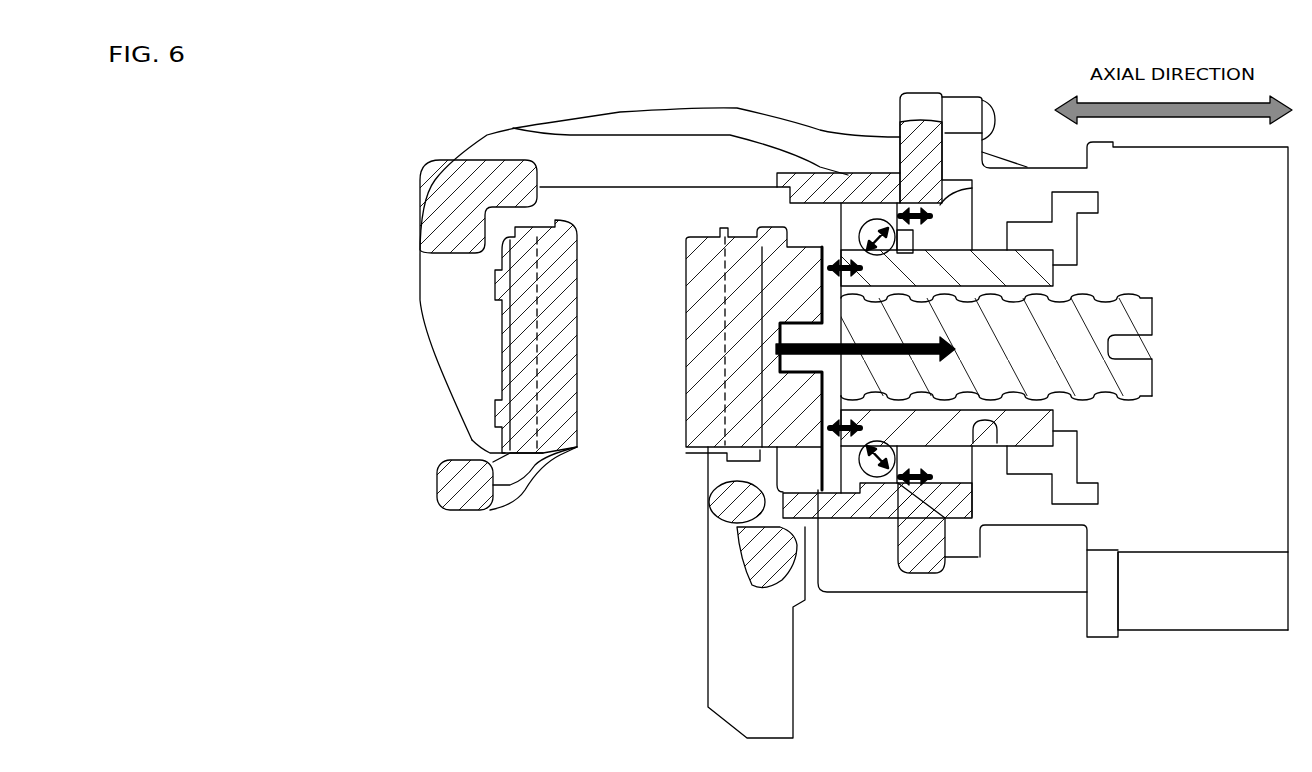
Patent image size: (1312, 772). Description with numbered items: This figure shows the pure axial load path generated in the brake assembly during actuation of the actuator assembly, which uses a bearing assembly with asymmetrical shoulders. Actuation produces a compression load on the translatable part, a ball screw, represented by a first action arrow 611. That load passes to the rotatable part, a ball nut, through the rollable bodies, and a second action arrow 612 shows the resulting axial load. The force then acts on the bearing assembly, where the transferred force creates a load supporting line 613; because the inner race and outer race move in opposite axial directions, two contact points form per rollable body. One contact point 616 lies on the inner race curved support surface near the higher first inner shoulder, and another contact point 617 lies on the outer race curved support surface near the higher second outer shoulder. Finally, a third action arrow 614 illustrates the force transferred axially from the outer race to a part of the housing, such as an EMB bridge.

The first action arrow 611 is at (776, 350).
The second action arrow 612 is at (830, 266).
The load supporting line 613 is at (859, 245).
The third action arrow 614 is at (923, 205).
The contact point 616 is at (835, 262).
The contact point 617 is at (887, 225).